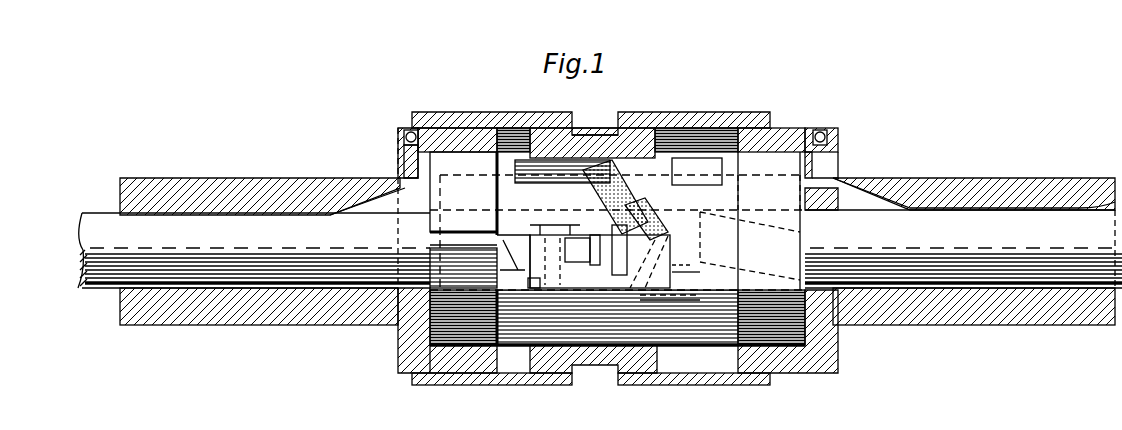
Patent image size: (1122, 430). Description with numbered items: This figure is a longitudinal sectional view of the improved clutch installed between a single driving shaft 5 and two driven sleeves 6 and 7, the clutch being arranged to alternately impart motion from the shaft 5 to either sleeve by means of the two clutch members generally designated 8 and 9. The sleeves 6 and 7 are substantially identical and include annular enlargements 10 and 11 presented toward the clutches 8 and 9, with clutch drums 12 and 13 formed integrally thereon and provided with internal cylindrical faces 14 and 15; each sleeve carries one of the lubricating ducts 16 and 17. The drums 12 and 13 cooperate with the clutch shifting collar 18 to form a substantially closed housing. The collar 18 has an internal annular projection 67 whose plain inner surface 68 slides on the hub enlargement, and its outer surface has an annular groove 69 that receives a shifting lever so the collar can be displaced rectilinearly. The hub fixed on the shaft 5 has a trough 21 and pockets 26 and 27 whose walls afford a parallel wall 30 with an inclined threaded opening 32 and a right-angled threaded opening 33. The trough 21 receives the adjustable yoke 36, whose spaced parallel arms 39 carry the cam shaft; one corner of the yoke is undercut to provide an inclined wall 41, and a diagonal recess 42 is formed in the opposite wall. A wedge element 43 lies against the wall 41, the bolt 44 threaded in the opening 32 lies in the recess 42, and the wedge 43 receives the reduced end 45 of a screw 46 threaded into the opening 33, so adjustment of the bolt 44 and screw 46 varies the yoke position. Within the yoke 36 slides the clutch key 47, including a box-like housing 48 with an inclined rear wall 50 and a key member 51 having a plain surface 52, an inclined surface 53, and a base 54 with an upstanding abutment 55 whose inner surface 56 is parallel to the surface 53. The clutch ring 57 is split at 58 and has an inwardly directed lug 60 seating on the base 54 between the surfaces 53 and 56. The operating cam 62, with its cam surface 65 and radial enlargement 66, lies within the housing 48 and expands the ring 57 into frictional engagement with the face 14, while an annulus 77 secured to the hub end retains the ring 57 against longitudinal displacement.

The shaft 5 is at (912, 225).
The sleeve 6 is at (171, 178).
The sleeve 7 is at (1012, 182).
The clutch 8 is at (512, 165).
The clutch 9 is at (748, 215).
The annular enlargement 10 is at (405, 348).
The annular enlargement 11 is at (840, 162).
The clutch drum 12 is at (470, 350).
The clutch drum 13 is at (785, 372).
The internal cylindrical face 14 is at (450, 152).
The internal cylindrical face 15 is at (800, 162).
The lubricating duct 16 is at (368, 192).
The lubricating duct 17 is at (858, 180).
The clutch shifting collar 18 is at (650, 128).
The trough portion 21 is at (655, 232).
The pocket 26 is at (675, 180).
The pocket 27 is at (690, 330).
The wall 30 is at (583, 240).
The threaded opening 32 is at (635, 212).
The threaded opening 33 is at (612, 375).
The adjustable yoke 36 is at (668, 248).
The arm 39 is at (576, 300).
The inclined wall 41 is at (672, 272).
The diagonal recess 42 is at (668, 228).
The wedge element 43 is at (670, 268).
The bolt 44 is at (662, 148).
The reduced end 45 is at (663, 290).
The screw 46 is at (672, 288).
The slidable clutch key 47 is at (556, 290).
The box-like housing 48 is at (538, 225).
The rear wall 50 is at (604, 215).
The key member 51 is at (500, 225).
The plain surface 52 is at (512, 228).
The inclined surface 53 is at (488, 258).
The base 54 is at (470, 237).
The upstanding abutment 55 is at (500, 258).
The inner surface 56 is at (510, 283).
The clutch ring 57 is at (455, 360).
The split 58 is at (445, 245).
The lug 60 is at (432, 240).
The operating cam 62 is at (560, 226).
The cam surface 65 is at (548, 270).
The radial enlargement 66 is at (580, 253).
The internal annular projection 67 is at (598, 150).
The inner surface 68 is at (592, 168).
The annular groove 69 is at (580, 158).
The annulus 77 is at (400, 176).